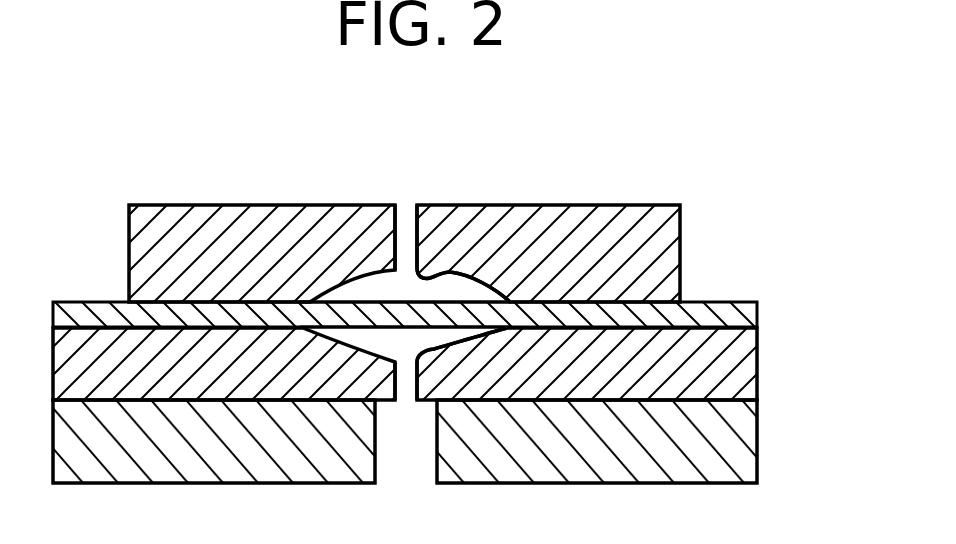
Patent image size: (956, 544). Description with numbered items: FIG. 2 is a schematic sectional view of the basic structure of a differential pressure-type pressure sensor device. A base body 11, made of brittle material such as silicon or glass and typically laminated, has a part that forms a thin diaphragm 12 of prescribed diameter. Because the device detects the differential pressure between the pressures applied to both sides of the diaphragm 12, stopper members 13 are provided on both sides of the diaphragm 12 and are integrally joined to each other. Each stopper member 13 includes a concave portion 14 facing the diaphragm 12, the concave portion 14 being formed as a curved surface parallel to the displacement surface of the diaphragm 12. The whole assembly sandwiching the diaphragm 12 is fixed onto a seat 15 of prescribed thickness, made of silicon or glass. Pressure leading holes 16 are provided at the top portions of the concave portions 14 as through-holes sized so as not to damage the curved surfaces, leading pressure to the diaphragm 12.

The base body 11 is at (730, 315).
The diaphragm 12 is at (373, 312).
The stopper member 13 is at (663, 245).
The concave portion 14 is at (445, 262).
The seat 15 is at (737, 432).
The pressure leading hole 16 is at (400, 237).